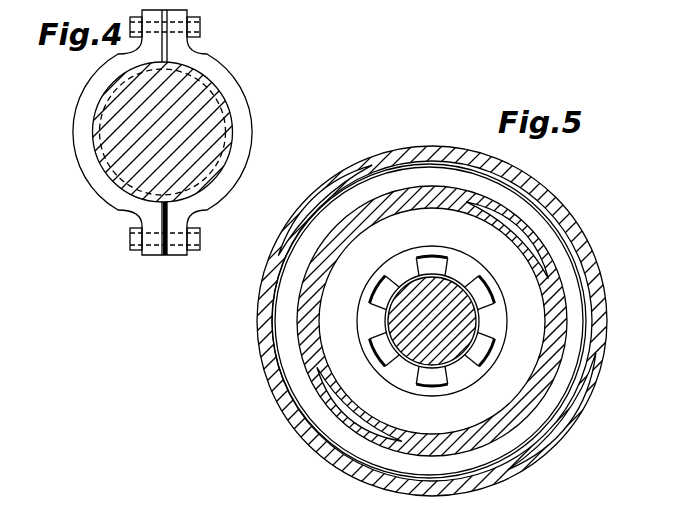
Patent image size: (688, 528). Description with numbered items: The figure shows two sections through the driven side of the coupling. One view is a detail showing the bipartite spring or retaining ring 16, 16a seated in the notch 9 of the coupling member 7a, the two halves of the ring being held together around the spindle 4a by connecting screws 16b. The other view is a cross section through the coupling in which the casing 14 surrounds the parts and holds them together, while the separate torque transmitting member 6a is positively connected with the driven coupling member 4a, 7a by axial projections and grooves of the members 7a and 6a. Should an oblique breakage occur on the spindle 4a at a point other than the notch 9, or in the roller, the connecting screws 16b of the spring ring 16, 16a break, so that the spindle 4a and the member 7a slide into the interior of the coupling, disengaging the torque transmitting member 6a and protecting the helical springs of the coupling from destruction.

In FIG. 4, the spring ring 16 is at (161, 151).
In FIG. 4, the spring ring 16a is at (237, 88).
In FIG. 4, the connecting screws 16b is at (201, 26).
In FIG. 4, the notch 9 is at (102, 117).
In FIG. 4, the spindle 4a is at (125, 152).
In FIG. 5, the torque transmitting member 6a is at (512, 278).
In FIG. 5, the coupling member 7a is at (430, 312).
In FIG. 5, the casing 14 is at (265, 345).